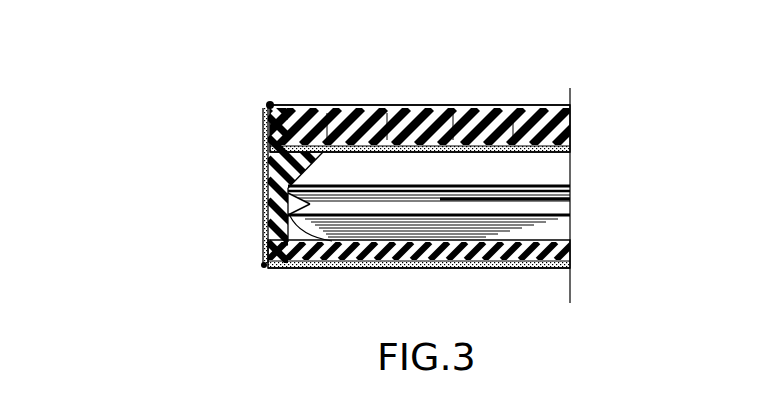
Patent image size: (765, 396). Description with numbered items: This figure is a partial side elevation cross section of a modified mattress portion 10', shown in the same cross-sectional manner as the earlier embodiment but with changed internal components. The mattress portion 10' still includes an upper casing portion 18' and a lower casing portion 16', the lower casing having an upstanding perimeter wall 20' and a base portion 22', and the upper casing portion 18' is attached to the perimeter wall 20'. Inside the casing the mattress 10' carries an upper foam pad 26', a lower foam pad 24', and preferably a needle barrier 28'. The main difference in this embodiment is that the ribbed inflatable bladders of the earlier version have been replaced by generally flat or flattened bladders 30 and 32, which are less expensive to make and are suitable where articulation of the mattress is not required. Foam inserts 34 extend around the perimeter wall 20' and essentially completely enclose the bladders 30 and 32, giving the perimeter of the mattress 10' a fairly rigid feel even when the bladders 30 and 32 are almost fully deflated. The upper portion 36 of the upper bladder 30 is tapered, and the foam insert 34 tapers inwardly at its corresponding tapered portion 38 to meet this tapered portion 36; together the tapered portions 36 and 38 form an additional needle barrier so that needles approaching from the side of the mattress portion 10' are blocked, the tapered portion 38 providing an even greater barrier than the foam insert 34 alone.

The mattress portion 10' is at (325, 195).
The lower casing portion 16' is at (406, 291).
The upper casing portion 18' is at (420, 91).
The perimeter wall 20' is at (228, 194).
The base portion 22' is at (419, 294).
The lower foam pad 24' is at (449, 252).
The upper foam pad 26' is at (438, 126).
The needle barrier 28' is at (459, 147).
The upper bladder 30 is at (550, 176).
The lower bladder 32 is at (555, 226).
The foam insert 34 is at (265, 205).
The tapered upper portion 36 is at (322, 157).
The tapered portion of foam insert 38 is at (268, 160).